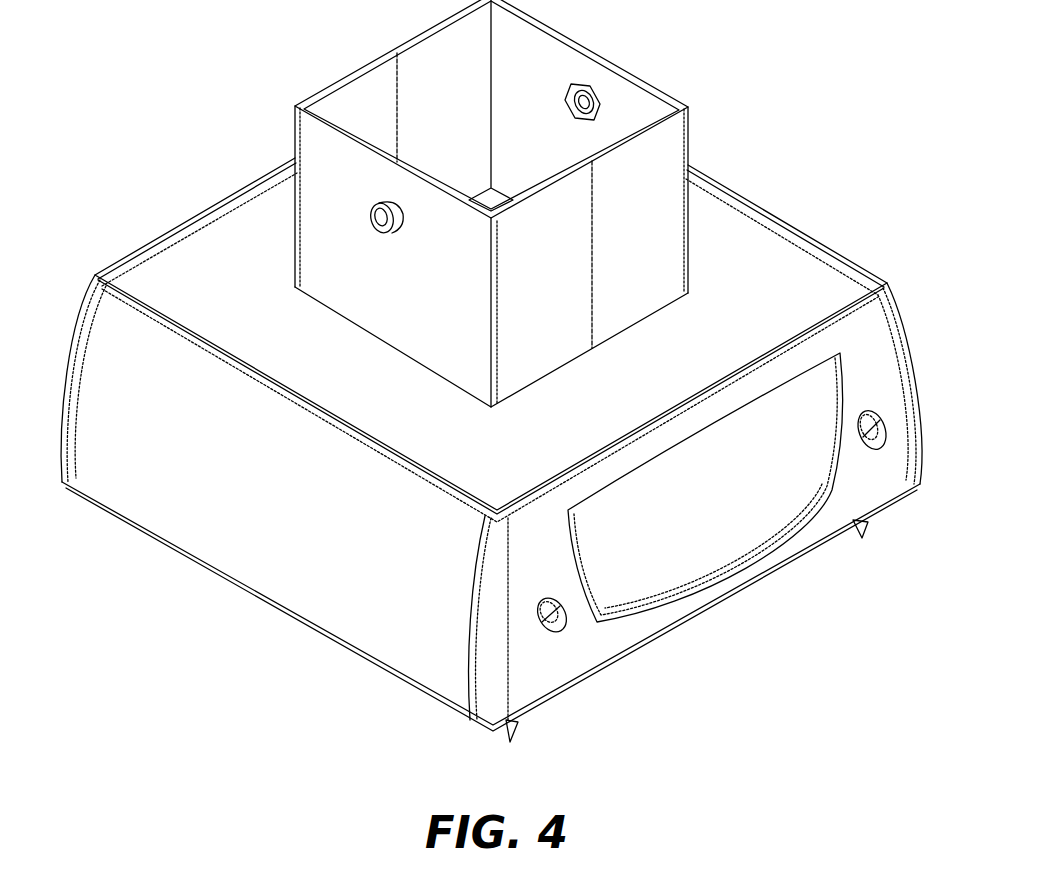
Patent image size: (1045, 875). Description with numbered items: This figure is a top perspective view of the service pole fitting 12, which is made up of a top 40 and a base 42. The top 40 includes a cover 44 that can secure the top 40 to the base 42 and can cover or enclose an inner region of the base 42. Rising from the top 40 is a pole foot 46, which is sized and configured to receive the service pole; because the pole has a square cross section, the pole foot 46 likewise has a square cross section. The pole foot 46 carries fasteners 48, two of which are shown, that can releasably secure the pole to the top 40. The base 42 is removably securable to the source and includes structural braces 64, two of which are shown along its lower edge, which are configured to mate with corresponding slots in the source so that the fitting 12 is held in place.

The fitting 12 is at (118, 75).
The top 40 is at (785, 177).
The base 42 is at (130, 545).
The cover 44 is at (810, 293).
The pole foot 46 is at (658, 151).
The fasteners 48 is at (578, 84).
The structural braces 64 is at (516, 734).